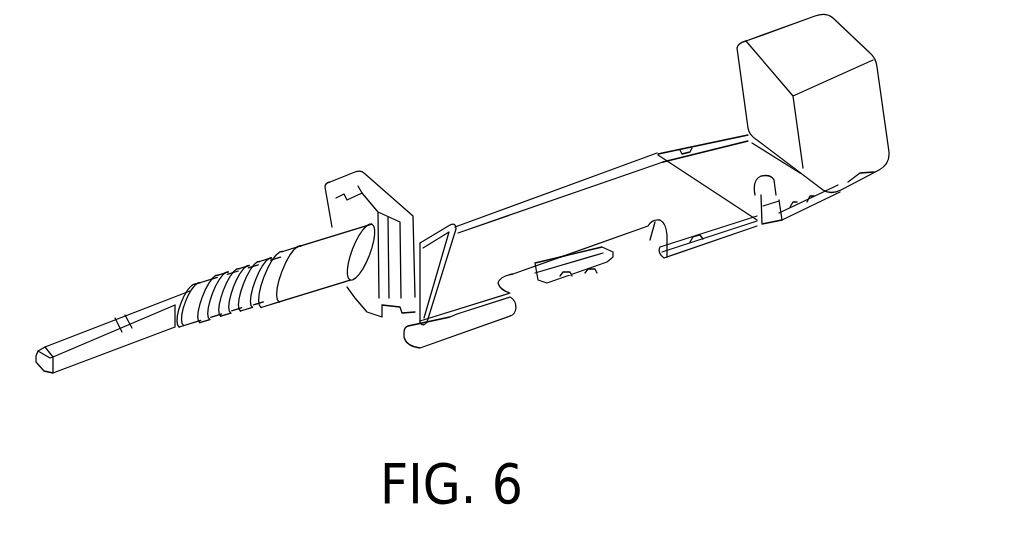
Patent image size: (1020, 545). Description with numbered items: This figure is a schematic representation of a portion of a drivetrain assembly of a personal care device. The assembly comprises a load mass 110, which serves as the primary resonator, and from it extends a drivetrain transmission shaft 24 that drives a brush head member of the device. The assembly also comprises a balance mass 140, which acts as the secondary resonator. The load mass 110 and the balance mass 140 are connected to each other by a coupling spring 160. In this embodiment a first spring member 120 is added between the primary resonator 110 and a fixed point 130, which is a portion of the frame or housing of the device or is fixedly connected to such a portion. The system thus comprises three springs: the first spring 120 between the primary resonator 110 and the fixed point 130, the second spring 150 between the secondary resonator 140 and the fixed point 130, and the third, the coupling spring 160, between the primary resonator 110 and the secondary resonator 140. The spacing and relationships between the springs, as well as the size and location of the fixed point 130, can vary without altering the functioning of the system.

The drivetrain transmission shaft 24 is at (78, 328).
The load mass 110 is at (352, 172).
The first spring member 120 is at (505, 255).
The fixed point 130 is at (642, 273).
The balance mass 140 is at (850, 180).
The second spring 150 is at (717, 148).
The coupling spring 160 is at (438, 234).